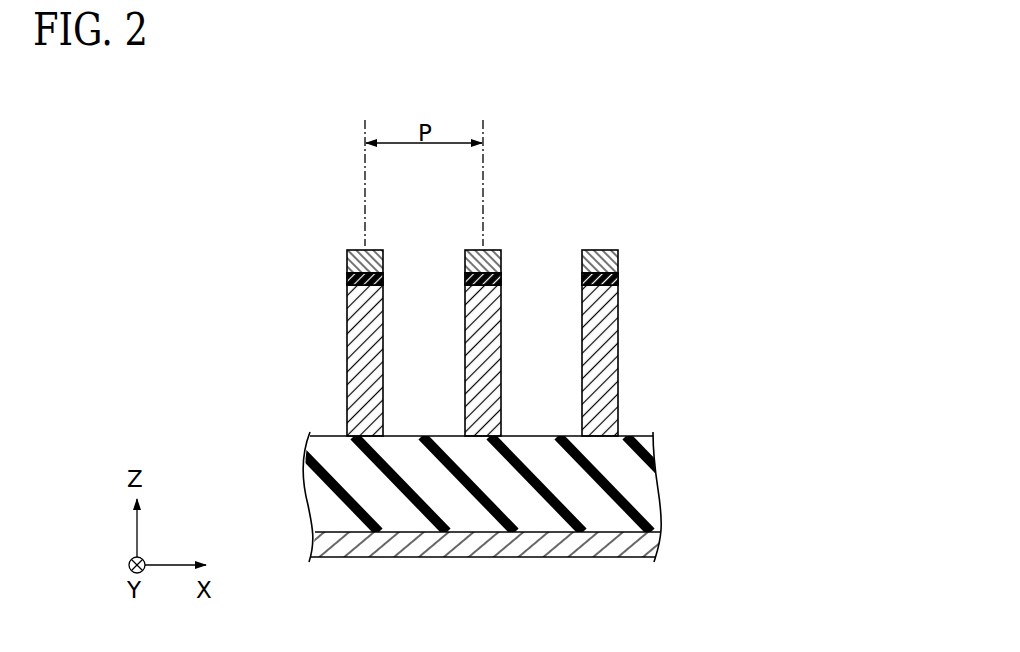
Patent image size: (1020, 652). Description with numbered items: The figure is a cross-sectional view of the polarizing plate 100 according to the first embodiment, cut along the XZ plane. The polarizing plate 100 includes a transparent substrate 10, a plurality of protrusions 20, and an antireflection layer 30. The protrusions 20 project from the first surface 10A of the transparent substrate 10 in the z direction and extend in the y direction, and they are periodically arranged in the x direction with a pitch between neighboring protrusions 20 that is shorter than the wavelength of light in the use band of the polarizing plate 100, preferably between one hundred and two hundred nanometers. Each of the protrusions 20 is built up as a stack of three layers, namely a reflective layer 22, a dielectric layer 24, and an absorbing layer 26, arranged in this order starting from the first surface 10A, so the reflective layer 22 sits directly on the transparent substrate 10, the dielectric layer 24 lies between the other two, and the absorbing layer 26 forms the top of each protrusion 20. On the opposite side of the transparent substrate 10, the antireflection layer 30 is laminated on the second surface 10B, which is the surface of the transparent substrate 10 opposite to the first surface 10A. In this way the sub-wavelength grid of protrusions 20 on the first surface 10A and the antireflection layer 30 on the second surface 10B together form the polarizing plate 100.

The polarizing plate 100 is at (764, 166).
The transparent substrate 10 is at (483, 463).
The first surface 10A is at (323, 434).
The second surface 10B is at (318, 541).
The protrusions 20 is at (513, 298).
The reflective layer 22 is at (372, 360).
The dielectric layer 24 is at (383, 284).
The absorbing layer 26 is at (383, 260).
The antireflection layer 30 is at (648, 545).